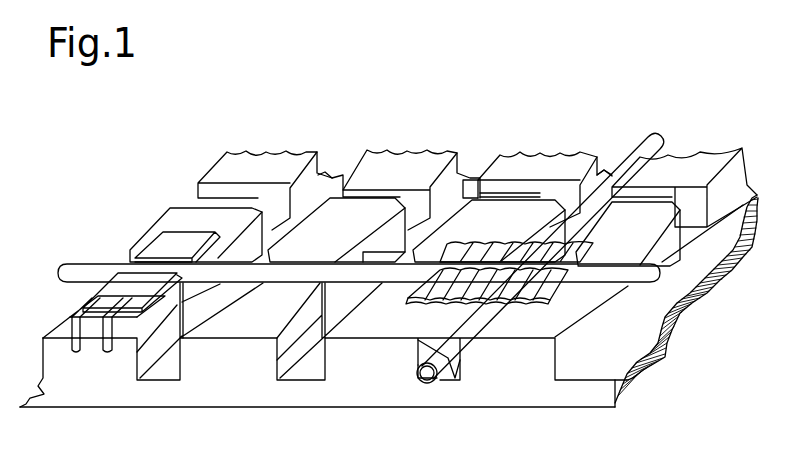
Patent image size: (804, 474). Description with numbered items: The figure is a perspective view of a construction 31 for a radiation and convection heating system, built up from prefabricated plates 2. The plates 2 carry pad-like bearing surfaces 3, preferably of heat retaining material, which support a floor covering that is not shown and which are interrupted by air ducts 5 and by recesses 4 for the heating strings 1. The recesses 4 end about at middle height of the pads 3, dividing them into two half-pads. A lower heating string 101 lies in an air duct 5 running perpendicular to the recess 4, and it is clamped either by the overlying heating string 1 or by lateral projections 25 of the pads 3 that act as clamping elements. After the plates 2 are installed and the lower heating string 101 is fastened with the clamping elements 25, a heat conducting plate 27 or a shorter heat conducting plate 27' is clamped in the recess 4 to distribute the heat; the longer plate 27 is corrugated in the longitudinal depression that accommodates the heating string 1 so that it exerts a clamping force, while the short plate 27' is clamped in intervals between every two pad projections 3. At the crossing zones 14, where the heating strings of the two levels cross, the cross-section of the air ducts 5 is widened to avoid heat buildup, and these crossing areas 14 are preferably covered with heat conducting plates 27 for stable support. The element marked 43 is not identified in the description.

The heating string 1 is at (85, 263).
The prefabricated plate 2 is at (632, 337).
The bearing surface 3 is at (163, 220).
The recess 4 is at (505, 193).
The air duct 5 is at (332, 177).
The crossing zone 14 is at (332, 310).
The lateral projection 25 is at (467, 360).
The heat conducting plate 27 is at (461, 357).
The short heat conducting plate 27' is at (152, 234).
The construction 31 is at (190, 157).
The connector plate 43 is at (72, 317).
The lower heating string 101 is at (650, 135).